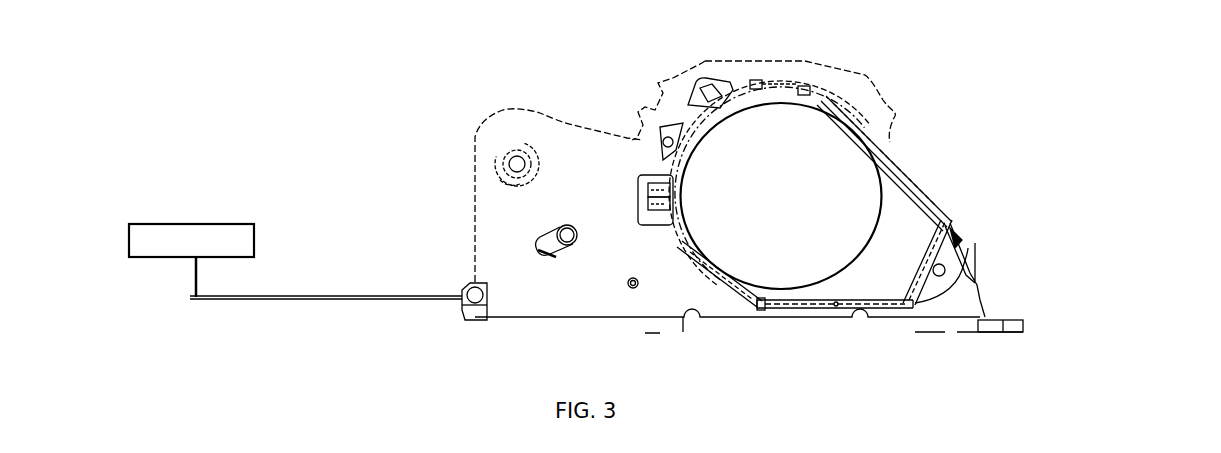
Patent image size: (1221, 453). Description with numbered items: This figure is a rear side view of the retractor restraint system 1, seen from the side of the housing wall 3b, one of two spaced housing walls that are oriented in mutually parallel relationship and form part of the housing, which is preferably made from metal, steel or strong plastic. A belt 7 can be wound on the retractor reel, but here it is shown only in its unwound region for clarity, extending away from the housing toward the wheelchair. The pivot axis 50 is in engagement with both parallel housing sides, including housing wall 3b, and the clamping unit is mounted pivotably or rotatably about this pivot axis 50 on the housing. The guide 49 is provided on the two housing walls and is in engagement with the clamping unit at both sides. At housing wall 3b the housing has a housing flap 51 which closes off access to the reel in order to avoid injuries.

The retractor restraint system 1 is at (972, 173).
The housing wall 3b is at (566, 137).
The belt 7 is at (320, 287).
The guide 49 is at (557, 255).
The pivot axis 50 is at (514, 158).
The housing flap 51 is at (880, 283).